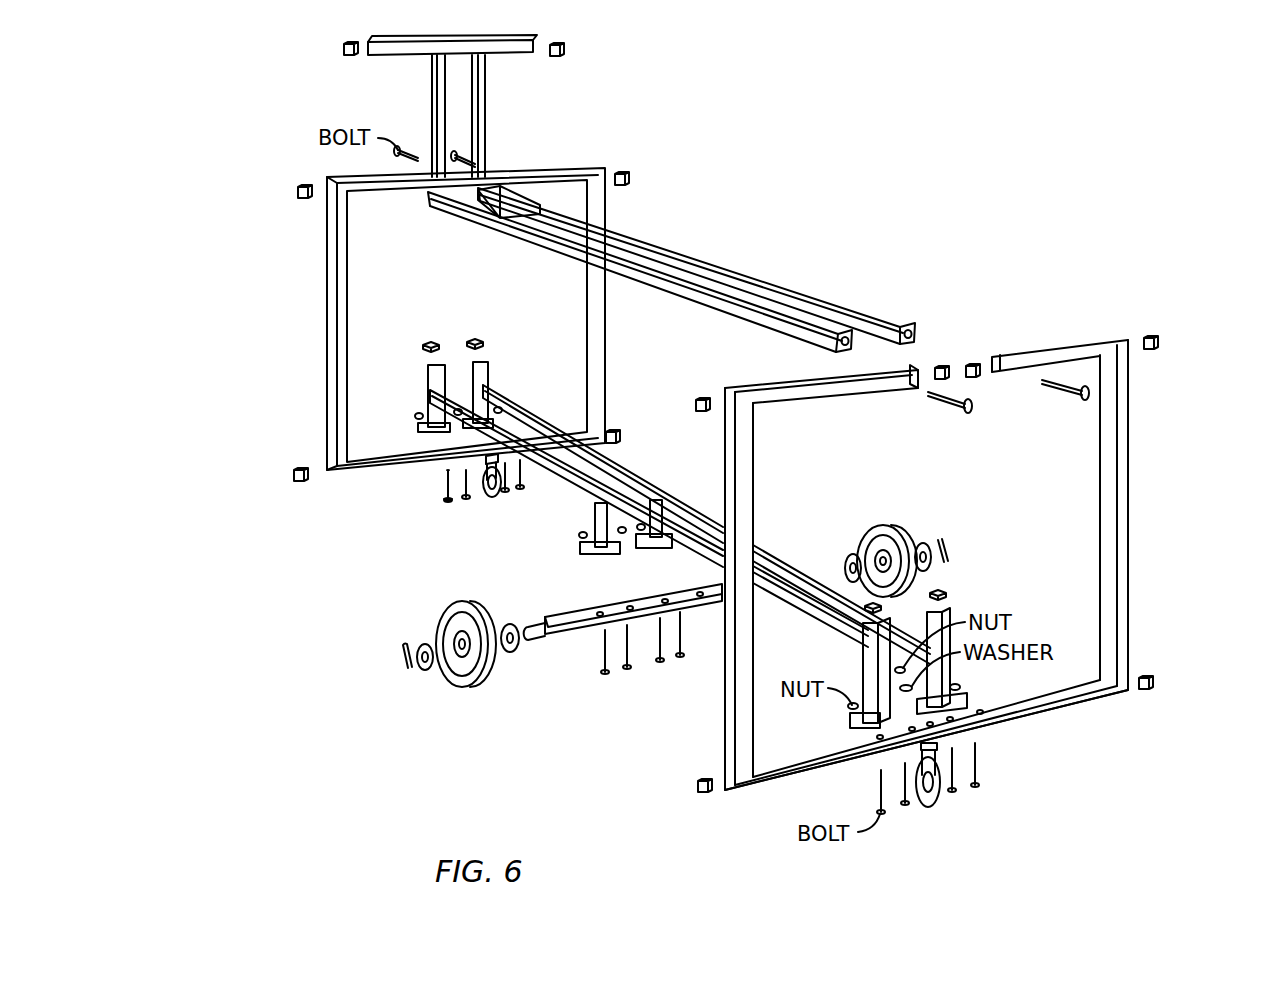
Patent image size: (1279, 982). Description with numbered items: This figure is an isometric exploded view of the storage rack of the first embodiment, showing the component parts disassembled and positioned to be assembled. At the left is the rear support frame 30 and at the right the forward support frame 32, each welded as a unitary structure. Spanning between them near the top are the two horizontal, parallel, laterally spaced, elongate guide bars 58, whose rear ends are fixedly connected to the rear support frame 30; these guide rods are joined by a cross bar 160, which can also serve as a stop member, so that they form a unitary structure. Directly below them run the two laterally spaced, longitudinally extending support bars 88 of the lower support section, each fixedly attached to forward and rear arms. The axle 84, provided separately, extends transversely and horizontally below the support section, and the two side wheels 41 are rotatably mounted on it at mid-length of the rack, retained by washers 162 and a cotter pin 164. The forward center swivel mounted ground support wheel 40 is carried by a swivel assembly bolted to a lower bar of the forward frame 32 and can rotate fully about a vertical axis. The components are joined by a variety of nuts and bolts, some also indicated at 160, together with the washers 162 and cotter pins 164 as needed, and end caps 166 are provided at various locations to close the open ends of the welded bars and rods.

The end cap 166 is at (558, 58).
The cross bar 160 is at (505, 203).
The guide bars 58 is at (715, 265).
The rear support frame 30 is at (330, 323).
The forward support frame 32 is at (1128, 512).
The support bars 88 is at (557, 492).
The side wheel 41 is at (462, 603).
The axle 84 is at (563, 605).
The cotter pin 164 is at (402, 648).
The washer 162 is at (550, 692).
The forward center swivel mounted ground support wheel 40 is at (940, 800).